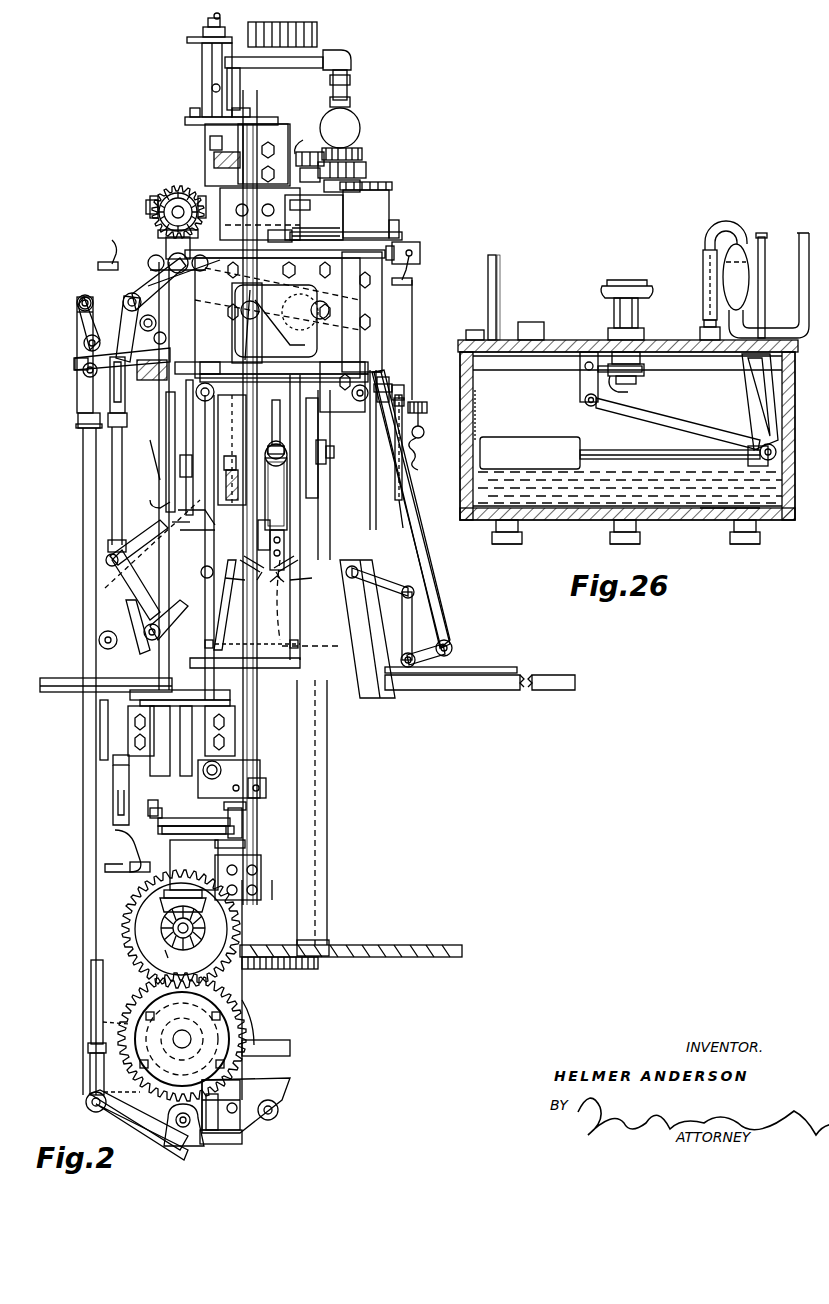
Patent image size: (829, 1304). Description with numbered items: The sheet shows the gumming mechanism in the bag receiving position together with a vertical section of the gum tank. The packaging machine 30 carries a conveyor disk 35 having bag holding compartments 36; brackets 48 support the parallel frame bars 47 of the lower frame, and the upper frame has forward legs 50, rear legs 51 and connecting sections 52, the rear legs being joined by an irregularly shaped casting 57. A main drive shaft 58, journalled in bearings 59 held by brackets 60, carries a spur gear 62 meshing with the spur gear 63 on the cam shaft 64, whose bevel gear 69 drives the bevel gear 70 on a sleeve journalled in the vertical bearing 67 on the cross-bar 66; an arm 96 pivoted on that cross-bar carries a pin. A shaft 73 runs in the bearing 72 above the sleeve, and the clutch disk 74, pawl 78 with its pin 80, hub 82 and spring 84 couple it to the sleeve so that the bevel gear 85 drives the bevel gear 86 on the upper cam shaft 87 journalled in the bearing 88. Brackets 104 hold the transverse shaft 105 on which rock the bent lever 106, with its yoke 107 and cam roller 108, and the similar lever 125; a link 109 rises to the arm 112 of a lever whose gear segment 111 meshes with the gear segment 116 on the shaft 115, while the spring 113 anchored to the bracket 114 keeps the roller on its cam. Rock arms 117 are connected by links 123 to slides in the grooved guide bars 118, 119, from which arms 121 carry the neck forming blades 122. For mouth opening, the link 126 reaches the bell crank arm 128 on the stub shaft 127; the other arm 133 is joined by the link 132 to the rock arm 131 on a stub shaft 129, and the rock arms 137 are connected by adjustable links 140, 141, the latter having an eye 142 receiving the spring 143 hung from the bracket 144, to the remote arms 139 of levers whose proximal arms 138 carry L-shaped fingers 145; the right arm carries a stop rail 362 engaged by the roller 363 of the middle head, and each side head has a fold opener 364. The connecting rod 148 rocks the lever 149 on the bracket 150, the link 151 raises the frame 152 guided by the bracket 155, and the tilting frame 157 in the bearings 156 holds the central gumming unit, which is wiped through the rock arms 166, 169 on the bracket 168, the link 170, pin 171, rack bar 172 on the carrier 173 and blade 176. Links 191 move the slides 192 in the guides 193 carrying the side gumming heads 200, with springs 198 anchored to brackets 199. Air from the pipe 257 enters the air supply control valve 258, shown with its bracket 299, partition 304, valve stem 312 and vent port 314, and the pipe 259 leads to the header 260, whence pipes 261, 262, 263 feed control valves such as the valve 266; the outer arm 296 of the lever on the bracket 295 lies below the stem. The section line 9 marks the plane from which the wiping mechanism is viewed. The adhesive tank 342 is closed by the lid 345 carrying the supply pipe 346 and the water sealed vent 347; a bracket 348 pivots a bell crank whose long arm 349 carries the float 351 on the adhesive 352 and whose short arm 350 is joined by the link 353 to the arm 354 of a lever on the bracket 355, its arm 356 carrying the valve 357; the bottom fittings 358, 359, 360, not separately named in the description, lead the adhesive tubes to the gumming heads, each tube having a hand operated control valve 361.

In FIG. 2, the cap 257 is at (206, 28).
In FIG. 2, the cylinder 258 is at (193, 65).
In FIG. 2, the pin 314 is at (212, 88).
In FIG. 2, the pipe 259 is at (350, 86).
In FIG. 2, the ball valve 260 is at (362, 128).
In FIG. 2, the fitting 262 is at (365, 148).
In FIG. 2, the fitting 261 is at (366, 158).
In FIG. 2, the pipe 263 is at (306, 148).
In FIG. 2, the plunger 295 is at (262, 130).
In FIG. 2, the block 299 is at (220, 124).
In FIG. 2, the pin 312 is at (215, 142).
In FIG. 2, the packing 296 is at (224, 160).
In FIG. 2, the block 342 is at (232, 170).
In FIG. 26, the block 342 is at (730, 515).
In FIG. 2, the section line 9 is at (172, 116).
In FIG. 2, the gear 86 is at (175, 190).
In FIG. 2, the bracket 87 is at (150, 196).
In FIG. 2, the hub 88 is at (148, 210).
In FIG. 2, the flange 85 is at (152, 224).
In FIG. 2, the bearing 72 is at (160, 248).
In FIG. 2, the link 114 is at (150, 280).
In FIG. 2, the lever 113 is at (128, 250).
In FIG. 2, the valve block 266 is at (318, 208).
In FIG. 2, the valve body 57 is at (390, 204).
In FIG. 2, the stem 304 is at (392, 224).
In FIG. 2, the pin 52 is at (400, 236).
In FIG. 2, the bracket 144 is at (422, 250).
In FIG. 2, the bolt 143 is at (420, 270).
In FIG. 2, the plate 137 is at (238, 284).
In FIG. 2, the side plate 151 is at (355, 270).
In FIG. 2, the slide 129 is at (362, 306).
In FIG. 2, the bar 131 is at (335, 345).
In FIG. 2, the cam 152 is at (240, 346).
In FIG. 2, the bracket 198 is at (352, 368).
In FIG. 2, the bracket 115 is at (390, 386).
In FIG. 2, the pin 116 is at (404, 400).
In FIG. 2, the hook 200 is at (428, 410).
In FIG. 2, the spring 142 is at (420, 460).
In FIG. 2, the rod 141 is at (404, 480).
In FIG. 2, the rod 363 is at (402, 500).
In FIG. 2, the arm 362 is at (412, 528).
In FIG. 2, the bar 126 is at (78, 328).
In FIG. 2, the link 150 is at (128, 285).
In FIG. 2, the pivot 128 is at (78, 298).
In FIG. 2, the link 127 is at (118, 304).
In FIG. 2, the pin 133 is at (78, 312).
In FIG. 2, the pivot 149 is at (78, 344).
In FIG. 2, the block 132 is at (78, 362).
In FIG. 2, the pivot 148 is at (80, 372).
In FIG. 2, the rod 112 is at (86, 380).
In FIG. 2, the bar 111 is at (180, 380).
In FIG. 2, the link 140 is at (200, 410).
In FIG. 2, the rod 73 is at (155, 470).
In FIG. 2, the block 109 is at (230, 460).
In FIG. 2, the lever 173 is at (205, 510).
In FIG. 2, the lever 172 is at (180, 520).
In FIG. 2, the lever 171 is at (190, 530).
In FIG. 2, the lever 170 is at (200, 545).
In FIG. 2, the rod 176 is at (190, 440).
In FIG. 2, the slide 156 is at (265, 450).
In FIG. 2, the spring 157 is at (228, 494).
In FIG. 2, the hook 199 is at (162, 500).
In FIG. 2, the stem 193 is at (300, 440).
In FIG. 2, the cylinder 191 is at (295, 470).
In FIG. 2, the bar 155 is at (320, 498).
In FIG. 2, the nozzle 192 is at (330, 530).
In FIG. 2, the jaw 145 is at (232, 580).
In FIG. 2, the finger 138 is at (232, 586).
In FIG. 2, the arm 50 is at (200, 630).
In FIG. 2, the pin 122 is at (208, 644).
In FIG. 2, the axis 364 is at (284, 646).
In FIG. 2, the link 121 is at (214, 662).
In FIG. 2, the link 139 is at (132, 600).
In FIG. 2, the link 123 is at (122, 636).
In FIG. 2, the arm 117 is at (424, 586).
In FIG. 2, the arm 51 is at (362, 620).
In FIG. 2, the table 118 is at (48, 680).
In FIG. 2, the table 119 is at (542, 690).
In FIG. 2, the bracket 169 is at (220, 680).
In FIG. 2, the rod 166 is at (150, 700).
In FIG. 2, the bracket 168 is at (130, 730).
In FIG. 2, the frame member 48 is at (220, 776).
In FIG. 2, the fork 84 is at (150, 804).
In FIG. 2, the pin 80 is at (152, 816).
In FIG. 2, the plate 78 is at (168, 820).
In FIG. 2, the post 82 is at (235, 812).
In FIG. 2, the flange 74 is at (240, 828).
In FIG. 2, the collar 96 is at (240, 846).
In FIG. 2, the bearing block 66 is at (245, 866).
In FIG. 2, the arm 67 is at (170, 872).
In FIG. 2, the frame 36 is at (328, 884).
In FIG. 2, the bevel gear 70 is at (160, 906).
In FIG. 2, the bevel pinion 64 is at (160, 936).
In FIG. 2, the shaft 69 is at (170, 970).
In FIG. 2, the gear 63 is at (244, 922).
In FIG. 2, the base plate 35 is at (345, 948).
In FIG. 2, the machine base 30 is at (398, 964).
In FIG. 2, the gear 47 is at (238, 996).
In FIG. 2, the shaft 62 is at (244, 1012).
In FIG. 2, the disk 58 is at (190, 1040).
In FIG. 2, the rod 59 is at (90, 1024).
In FIG. 2, the rod 60 is at (90, 1090).
In FIG. 2, the pivot 125 is at (95, 1118).
In FIG. 2, the arm 108 is at (160, 1126).
In FIG. 2, the pivot 107 is at (194, 1158).
In FIG. 2, the bracket 106 is at (148, 1150).
In FIG. 2, the bracket 104 is at (255, 1128).
In FIG. 2, the pivot 105 is at (282, 1112).
In FIG. 26, the tank cover 345 is at (592, 328).
In FIG. 26, the fitting 346 is at (640, 310).
In FIG. 26, the bulb 347 is at (712, 224).
In FIG. 26, the bracket 355 is at (580, 364).
In FIG. 26, the pivot 354 is at (584, 392).
In FIG. 26, the rod 357 is at (602, 372).
In FIG. 26, the spring 356 is at (620, 392).
In FIG. 26, the bracket 348 is at (752, 384).
In FIG. 26, the lever 353 is at (620, 412).
In FIG. 26, the float 351 is at (530, 428).
In FIG. 26, the rod 349 is at (630, 440).
In FIG. 26, the pivot block 350 is at (760, 438).
In FIG. 26, the tank 352 is at (580, 500).
In FIG. 26, the foot 358 is at (504, 530).
In FIG. 26, the foot 359 is at (640, 536).
In FIG. 26, the foot 360 is at (758, 538).
In FIG. 26, the nut 361 is at (510, 546).